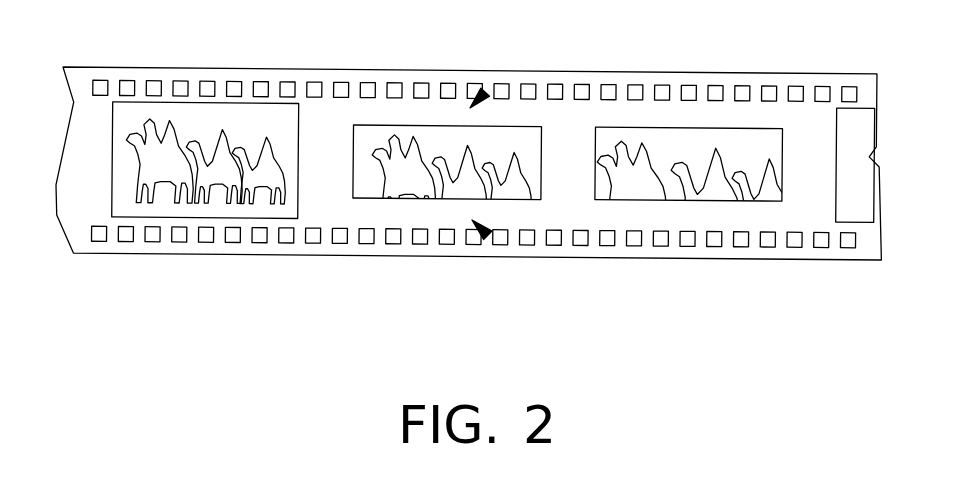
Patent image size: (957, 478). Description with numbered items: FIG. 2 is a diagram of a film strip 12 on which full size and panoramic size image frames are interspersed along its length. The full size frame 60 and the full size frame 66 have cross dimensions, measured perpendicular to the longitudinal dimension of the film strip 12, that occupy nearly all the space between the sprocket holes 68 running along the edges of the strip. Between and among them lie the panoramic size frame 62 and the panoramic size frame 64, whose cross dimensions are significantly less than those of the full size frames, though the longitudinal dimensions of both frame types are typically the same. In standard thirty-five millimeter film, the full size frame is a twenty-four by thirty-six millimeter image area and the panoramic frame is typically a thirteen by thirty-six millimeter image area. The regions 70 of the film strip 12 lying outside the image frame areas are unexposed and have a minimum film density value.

The film strip 12 is at (139, 76).
The full size frame 60 is at (113, 176).
The panoramic size frame 62 is at (354, 173).
The panoramic size frame 64 is at (596, 172).
The full size frame 66 is at (837, 175).
The sprocket holes 68 is at (312, 80).
The regions of the film strip 70 is at (490, 90).